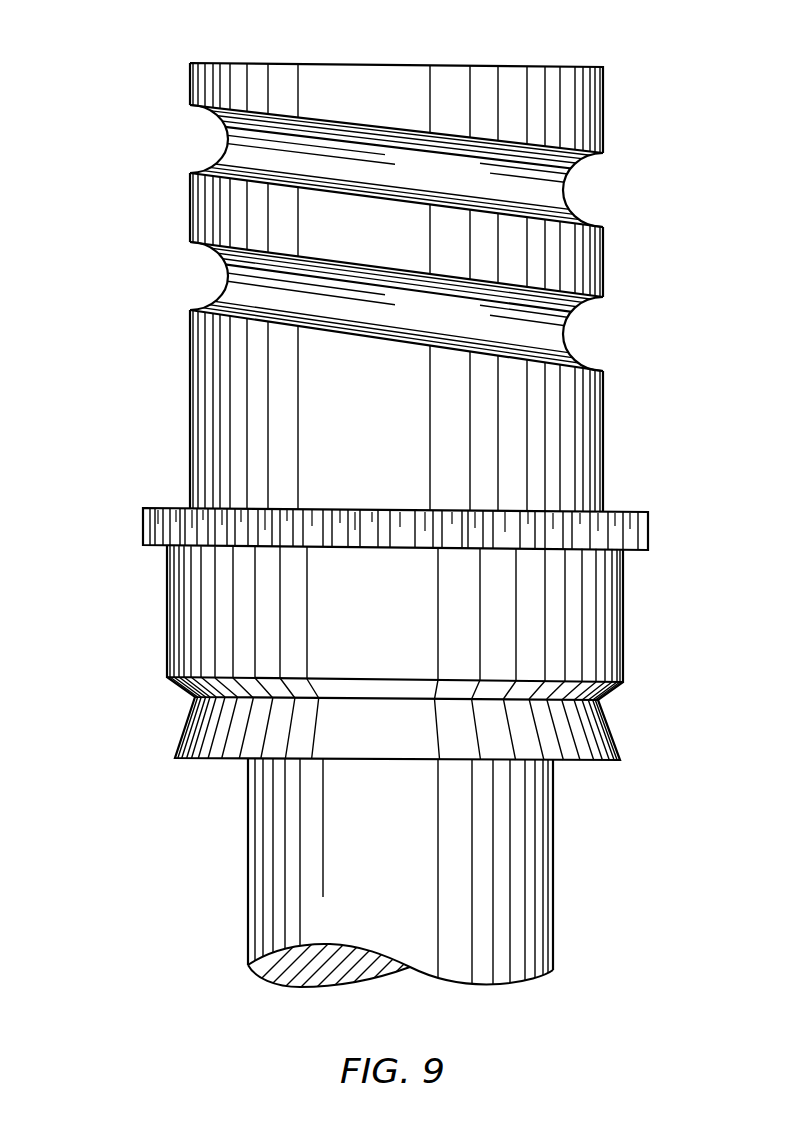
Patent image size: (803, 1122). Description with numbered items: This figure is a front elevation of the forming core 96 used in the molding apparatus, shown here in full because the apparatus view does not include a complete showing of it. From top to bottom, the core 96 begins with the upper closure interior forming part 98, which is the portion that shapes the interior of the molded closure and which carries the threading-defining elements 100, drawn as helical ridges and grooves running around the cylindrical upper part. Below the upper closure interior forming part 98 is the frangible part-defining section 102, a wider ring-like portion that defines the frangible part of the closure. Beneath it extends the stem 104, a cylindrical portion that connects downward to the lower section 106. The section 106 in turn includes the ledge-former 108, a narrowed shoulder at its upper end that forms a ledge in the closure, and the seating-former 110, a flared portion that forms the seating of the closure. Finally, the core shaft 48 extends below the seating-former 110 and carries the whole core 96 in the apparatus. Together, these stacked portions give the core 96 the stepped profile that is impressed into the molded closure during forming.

The core 96 is at (628, 82).
The upper closure interior forming part 98 is at (622, 274).
The threading-defining elements 100 is at (226, 268).
The frangible part-defining section 102 is at (139, 528).
The stem 104 is at (182, 607).
The section 106 is at (425, 760).
The ledge-former 108 is at (181, 688).
The seating-former 110 is at (233, 751).
The core shaft 48 is at (541, 845).